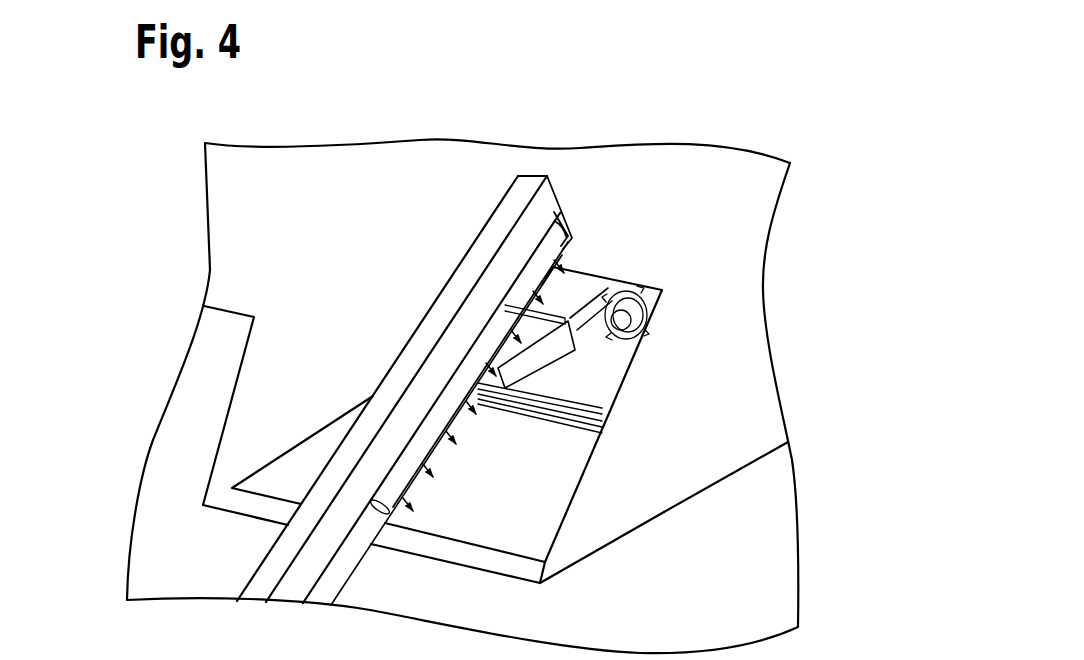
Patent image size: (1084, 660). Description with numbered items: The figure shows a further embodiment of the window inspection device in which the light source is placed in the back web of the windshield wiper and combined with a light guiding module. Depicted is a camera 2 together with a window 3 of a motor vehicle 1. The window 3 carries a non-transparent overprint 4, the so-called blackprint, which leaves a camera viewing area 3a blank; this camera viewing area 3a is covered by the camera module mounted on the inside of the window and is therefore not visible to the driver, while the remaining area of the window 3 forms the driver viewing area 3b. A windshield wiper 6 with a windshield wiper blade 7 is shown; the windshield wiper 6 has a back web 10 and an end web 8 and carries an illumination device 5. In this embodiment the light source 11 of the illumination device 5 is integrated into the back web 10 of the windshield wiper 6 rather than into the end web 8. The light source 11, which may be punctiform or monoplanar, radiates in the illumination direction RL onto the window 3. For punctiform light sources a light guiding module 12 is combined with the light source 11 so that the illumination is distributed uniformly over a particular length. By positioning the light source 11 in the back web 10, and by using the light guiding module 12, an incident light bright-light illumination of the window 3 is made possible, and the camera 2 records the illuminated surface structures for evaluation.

The motor vehicle 1 is at (820, 108).
The camera 2 is at (650, 303).
The window 3 is at (760, 492).
The camera viewing area 3a is at (555, 472).
The driver viewing area 3b is at (688, 528).
The non-transparent overprint 4 is at (337, 297).
The illumination device 5 is at (398, 338).
The windshield wiper 6 is at (447, 286).
The windshield wiper blade 7 is at (497, 312).
The end web 8 is at (557, 207).
The back web 10 is at (518, 173).
The light source 11 is at (455, 352).
The light guiding module 12 is at (410, 478).
The illumination direction RL is at (562, 258).